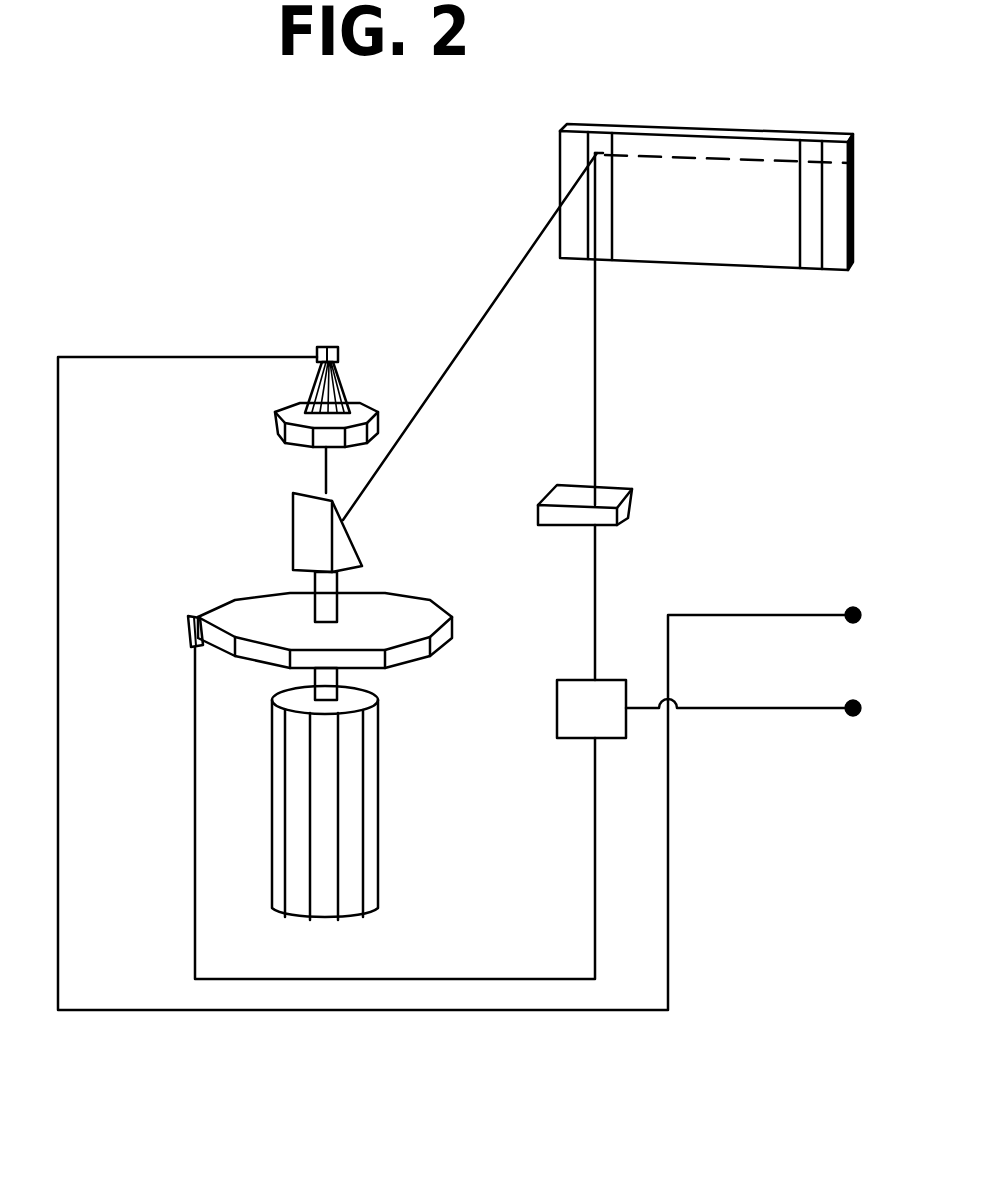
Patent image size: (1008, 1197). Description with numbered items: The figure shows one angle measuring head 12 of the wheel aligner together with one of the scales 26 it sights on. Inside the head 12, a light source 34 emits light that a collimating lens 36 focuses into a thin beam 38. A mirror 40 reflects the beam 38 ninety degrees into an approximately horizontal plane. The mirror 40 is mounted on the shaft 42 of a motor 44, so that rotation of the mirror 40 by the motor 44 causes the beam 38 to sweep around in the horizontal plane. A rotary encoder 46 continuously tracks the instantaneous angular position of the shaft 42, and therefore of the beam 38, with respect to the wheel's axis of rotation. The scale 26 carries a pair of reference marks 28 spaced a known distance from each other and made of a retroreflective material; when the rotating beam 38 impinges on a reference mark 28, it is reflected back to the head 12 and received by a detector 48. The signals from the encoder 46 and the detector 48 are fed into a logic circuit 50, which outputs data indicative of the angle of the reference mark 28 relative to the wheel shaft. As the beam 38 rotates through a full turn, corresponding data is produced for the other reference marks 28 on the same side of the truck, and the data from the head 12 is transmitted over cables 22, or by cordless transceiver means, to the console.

The angle measuring head 12 is at (215, 322).
The cables 22 is at (780, 620).
The scale 26 is at (707, 243).
The reference marks 28 is at (600, 143).
The light source 34 is at (330, 345).
The collimating lens 36 is at (278, 422).
The beam 38 is at (436, 392).
The mirror 40 is at (305, 523).
The shaft 42 is at (305, 596).
The motor 44 is at (378, 885).
The rotary encoder 46 is at (188, 636).
The detector 48 is at (625, 514).
The logic circuit 50 is at (572, 710).